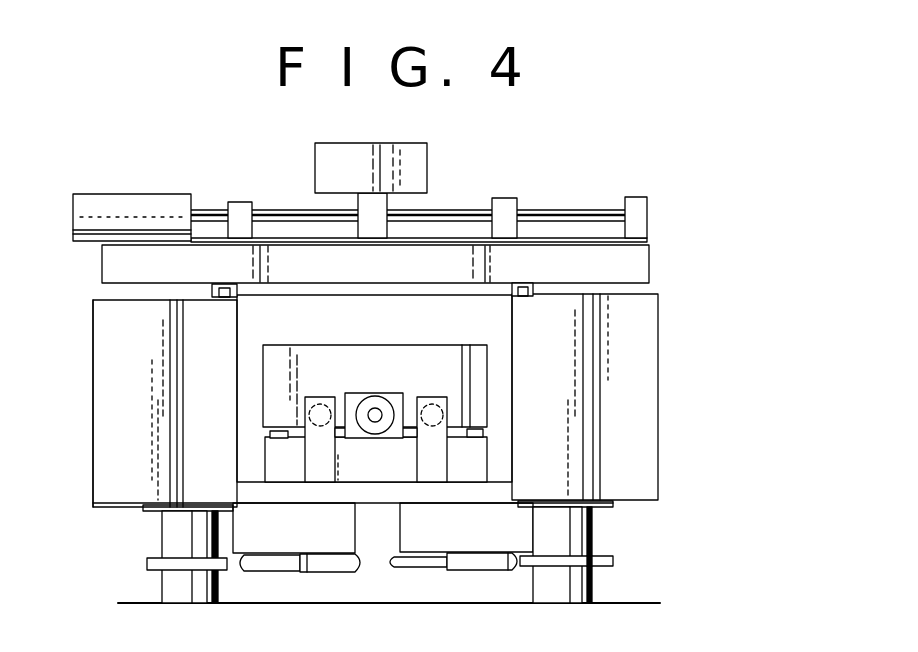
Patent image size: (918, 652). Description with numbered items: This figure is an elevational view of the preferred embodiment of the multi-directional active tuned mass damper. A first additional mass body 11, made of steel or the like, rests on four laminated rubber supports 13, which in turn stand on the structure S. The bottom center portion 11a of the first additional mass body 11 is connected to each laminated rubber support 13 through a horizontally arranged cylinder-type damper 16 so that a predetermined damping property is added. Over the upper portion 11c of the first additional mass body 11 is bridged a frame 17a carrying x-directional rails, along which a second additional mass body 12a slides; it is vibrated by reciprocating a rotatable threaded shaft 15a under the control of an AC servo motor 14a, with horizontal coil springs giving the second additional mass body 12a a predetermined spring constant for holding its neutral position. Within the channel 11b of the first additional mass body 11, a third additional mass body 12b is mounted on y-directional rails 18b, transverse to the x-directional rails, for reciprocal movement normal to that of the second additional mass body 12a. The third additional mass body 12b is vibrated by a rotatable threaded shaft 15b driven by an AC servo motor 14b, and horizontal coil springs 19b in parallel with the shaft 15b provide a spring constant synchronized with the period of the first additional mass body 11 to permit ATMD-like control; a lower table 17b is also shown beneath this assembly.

The first additional mass body 11 is at (660, 421).
The bottom center portion 11a is at (363, 523).
The channel 11b is at (512, 315).
The upper portion 11c is at (97, 300).
The second additional mass body 12a is at (418, 163).
The third additional mass body 12b is at (322, 362).
The laminated rubber support 13 is at (172, 527).
The AC servo motor 14a is at (115, 205).
The AC servo motor 14b is at (376, 412).
The rotatable threaded shaft 15a is at (452, 212).
The rotatable threaded shaft 15b is at (392, 401).
The damper 16 is at (277, 553).
The frame 17a is at (633, 263).
The lower table 17b is at (482, 462).
The y-directional rails 18b is at (267, 432).
The horizontal coil springs 19b is at (318, 397).
The structure S is at (638, 596).